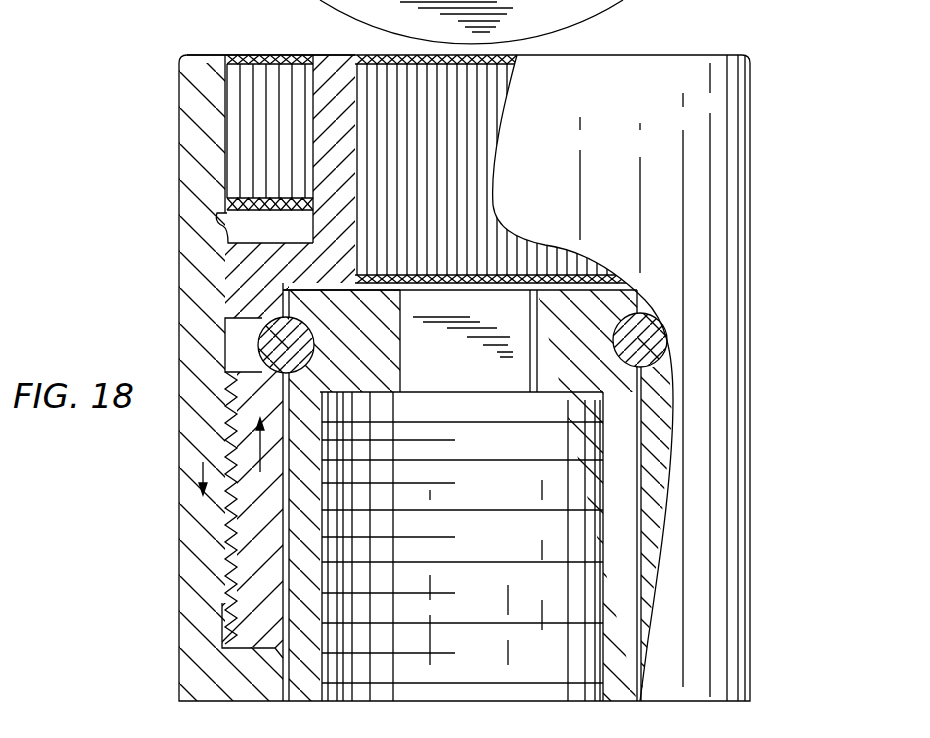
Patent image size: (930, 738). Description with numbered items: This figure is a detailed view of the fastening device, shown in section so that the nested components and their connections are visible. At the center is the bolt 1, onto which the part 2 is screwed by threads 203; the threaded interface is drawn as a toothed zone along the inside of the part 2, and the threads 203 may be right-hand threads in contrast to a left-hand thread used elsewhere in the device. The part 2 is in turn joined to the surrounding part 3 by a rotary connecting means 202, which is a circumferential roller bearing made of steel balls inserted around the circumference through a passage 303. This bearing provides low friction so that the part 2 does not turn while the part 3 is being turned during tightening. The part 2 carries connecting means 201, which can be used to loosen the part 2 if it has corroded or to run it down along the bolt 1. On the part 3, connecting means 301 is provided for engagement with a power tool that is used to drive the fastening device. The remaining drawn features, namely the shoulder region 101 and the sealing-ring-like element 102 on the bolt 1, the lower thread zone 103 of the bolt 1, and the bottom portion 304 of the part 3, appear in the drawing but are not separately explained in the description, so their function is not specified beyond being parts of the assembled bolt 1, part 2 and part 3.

The bolt 1 is at (630, 412).
The part 2 is at (333, 143).
The part 3 is at (750, 155).
The shoulder of inner sleeve 101 is at (289, 294).
The outer sealing ring 102 is at (667, 335).
The external thread of inner sleeve 103 is at (283, 607).
The connecting means 201 is at (350, 56).
The rotary connecting means 202 is at (655, 480).
The threads 203 is at (247, 340).
The connecting means 301 is at (242, 169).
The passage 303 is at (228, 542).
The bottom flange of nut 304 is at (243, 673).